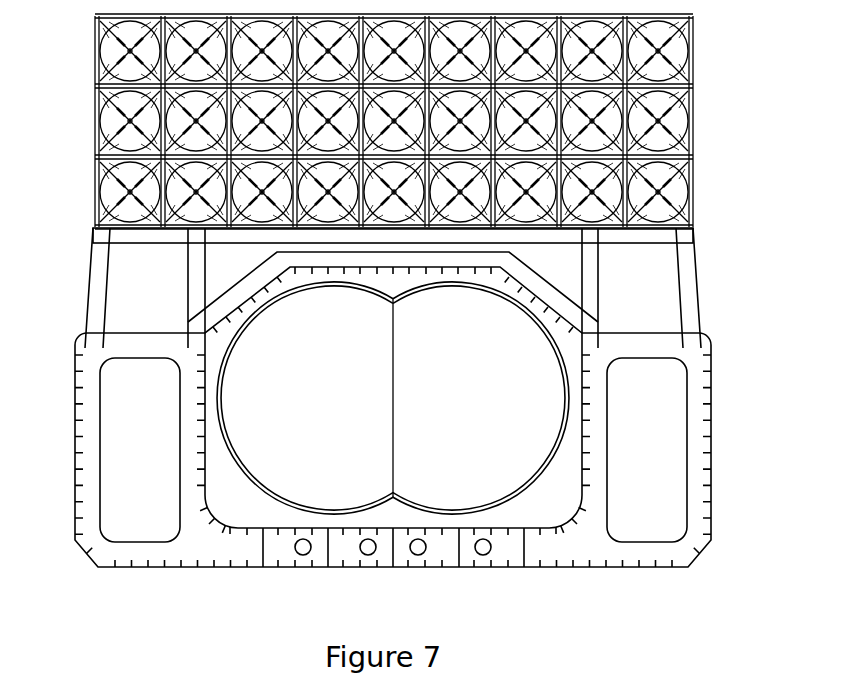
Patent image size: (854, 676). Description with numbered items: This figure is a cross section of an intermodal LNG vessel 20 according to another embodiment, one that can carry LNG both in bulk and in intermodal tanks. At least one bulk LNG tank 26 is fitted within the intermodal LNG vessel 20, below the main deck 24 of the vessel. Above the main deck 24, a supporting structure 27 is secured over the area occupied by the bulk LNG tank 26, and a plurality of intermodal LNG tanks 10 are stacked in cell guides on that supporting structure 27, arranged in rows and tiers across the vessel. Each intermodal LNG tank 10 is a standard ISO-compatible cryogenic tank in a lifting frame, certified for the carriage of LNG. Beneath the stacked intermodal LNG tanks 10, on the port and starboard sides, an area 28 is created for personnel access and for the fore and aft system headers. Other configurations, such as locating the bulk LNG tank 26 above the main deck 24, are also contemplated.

The intermodal LNG tank 10 is at (105, 123).
The intermodal LNG vessel 20 is at (72, 385).
The main deck 24 is at (693, 243).
The bulk LNG tank 26 is at (565, 368).
The supporting structure 27 is at (93, 243).
The area for personnel access and system headers 28 is at (155, 298).